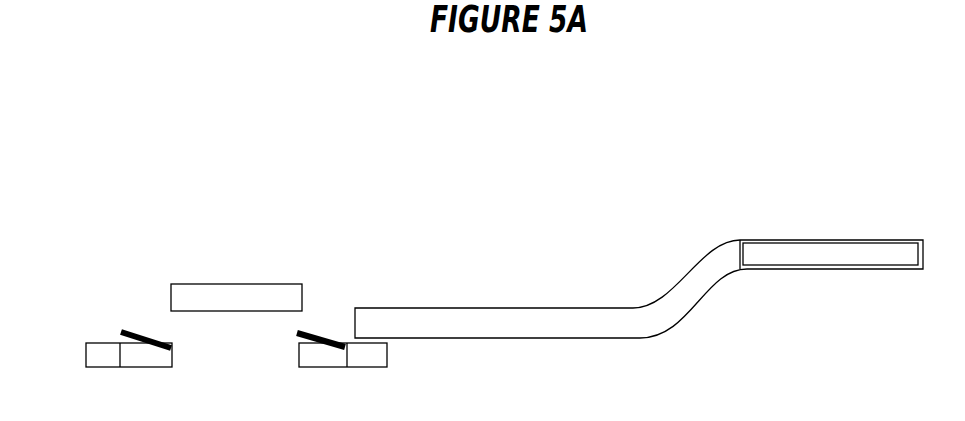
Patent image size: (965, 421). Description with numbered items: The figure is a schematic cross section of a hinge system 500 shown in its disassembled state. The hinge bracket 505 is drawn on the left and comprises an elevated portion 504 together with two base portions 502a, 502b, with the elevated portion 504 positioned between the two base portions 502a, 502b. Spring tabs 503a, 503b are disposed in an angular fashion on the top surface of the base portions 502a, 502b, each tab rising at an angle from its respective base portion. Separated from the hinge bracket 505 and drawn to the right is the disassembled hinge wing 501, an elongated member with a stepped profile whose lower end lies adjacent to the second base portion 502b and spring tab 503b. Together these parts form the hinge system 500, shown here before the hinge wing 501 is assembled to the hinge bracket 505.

The hinge system 500 is at (760, 141).
The hinge wing 501 is at (603, 339).
The base portion 502a is at (108, 367).
The base portion 502b is at (365, 368).
The spring tab 503a is at (140, 333).
The spring tab 503b is at (312, 333).
The elevated portion 504 is at (207, 311).
The hinge bracket 505 is at (139, 208).